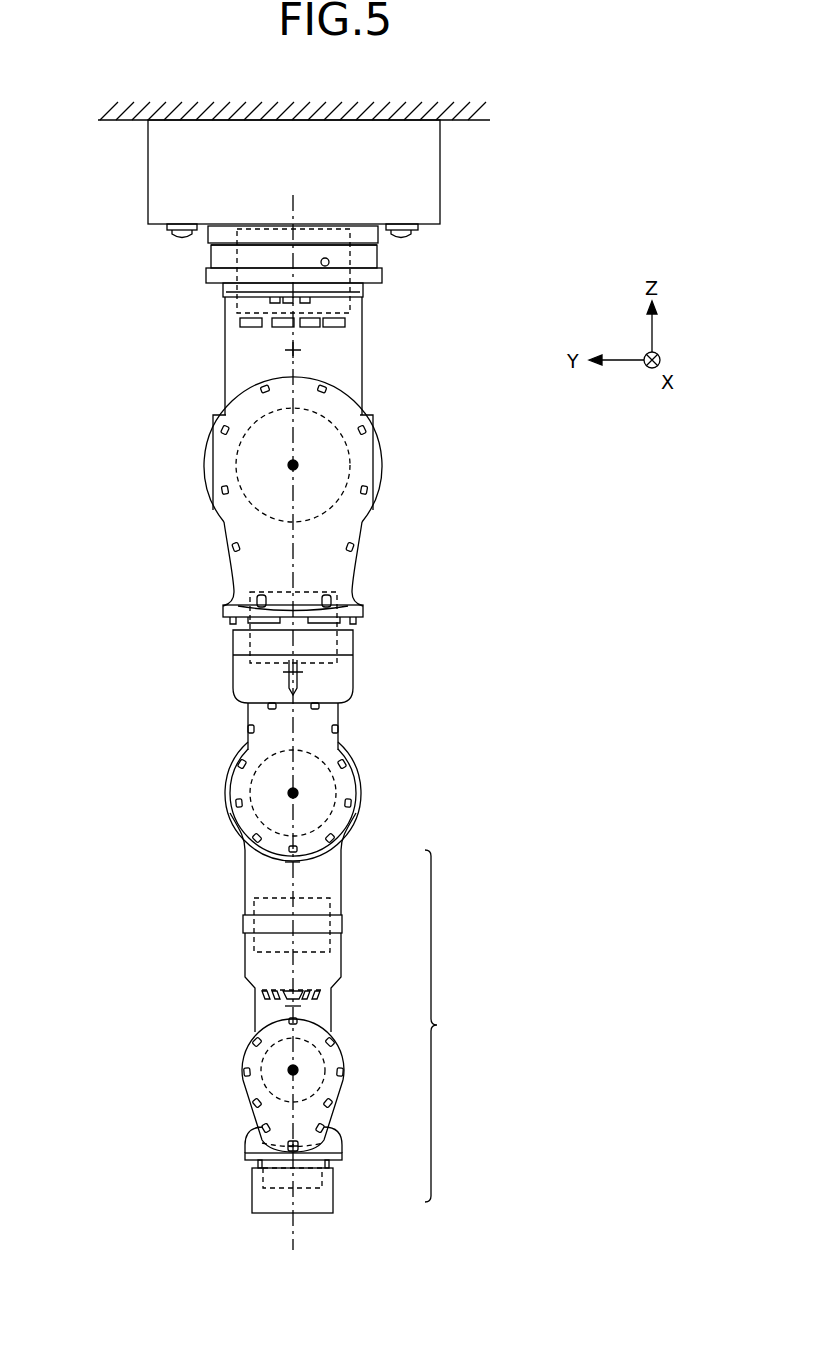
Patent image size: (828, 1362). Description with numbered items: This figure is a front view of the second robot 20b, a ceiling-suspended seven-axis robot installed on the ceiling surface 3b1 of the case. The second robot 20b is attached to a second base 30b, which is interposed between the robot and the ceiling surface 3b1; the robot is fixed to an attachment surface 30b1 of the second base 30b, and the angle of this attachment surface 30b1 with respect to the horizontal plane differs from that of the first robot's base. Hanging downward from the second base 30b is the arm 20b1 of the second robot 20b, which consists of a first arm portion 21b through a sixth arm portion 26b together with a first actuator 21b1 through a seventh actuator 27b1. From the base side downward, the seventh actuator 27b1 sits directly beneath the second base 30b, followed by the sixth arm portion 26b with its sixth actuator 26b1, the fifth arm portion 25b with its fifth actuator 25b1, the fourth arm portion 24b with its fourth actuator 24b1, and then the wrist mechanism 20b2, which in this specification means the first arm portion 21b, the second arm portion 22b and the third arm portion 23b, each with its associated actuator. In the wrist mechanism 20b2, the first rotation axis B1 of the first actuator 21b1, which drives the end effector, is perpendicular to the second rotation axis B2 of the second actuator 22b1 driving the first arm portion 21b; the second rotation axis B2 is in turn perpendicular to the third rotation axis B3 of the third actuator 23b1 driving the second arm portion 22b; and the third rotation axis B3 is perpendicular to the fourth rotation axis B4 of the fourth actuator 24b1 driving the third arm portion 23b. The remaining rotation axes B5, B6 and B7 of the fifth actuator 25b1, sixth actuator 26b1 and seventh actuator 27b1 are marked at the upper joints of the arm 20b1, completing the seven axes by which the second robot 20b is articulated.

The ceiling surface 3b1 is at (465, 122).
The second base 30b is at (430, 180).
The attachment surface 30b1 is at (388, 232).
The seventh actuator 27b1 is at (236, 257).
The seventh rotation axis B7 is at (293, 341).
The sixth arm portion 26b is at (348, 368).
The sixth actuator 26b1 is at (237, 458).
The sixth rotation axis B6 is at (290, 467).
The arm 20b1 is at (278, 460).
The fifth arm portion 25b is at (337, 572).
The fifth actuator 25b1 is at (237, 637).
The fifth rotation axis B5 is at (290, 648).
The fourth arm portion 24b is at (330, 718).
The fourth actuator 24b1 is at (251, 788).
The fourth rotation axis B4 is at (290, 795).
The second robot 20b is at (320, 722).
The third arm portion 23b is at (318, 886).
The third actuator 23b1 is at (245, 923).
The third rotation axis B3 is at (293, 958).
The second arm portion 22b is at (318, 1016).
The second actuator 22b1 is at (261, 1062).
The second rotation axis B2 is at (290, 1072).
The wrist mechanism 20b2 is at (309, 1030).
The first arm portion 21b is at (327, 1202).
The first actuator 21b1 is at (264, 1176).
The first rotation axis B1 is at (293, 1225).